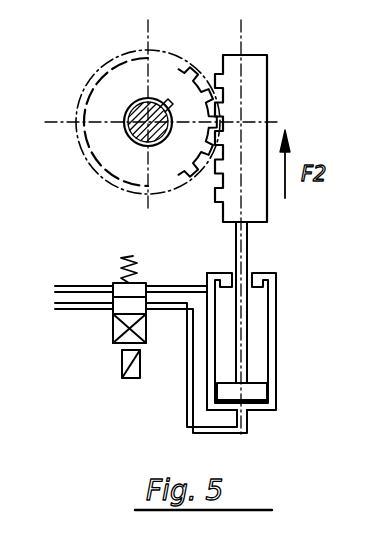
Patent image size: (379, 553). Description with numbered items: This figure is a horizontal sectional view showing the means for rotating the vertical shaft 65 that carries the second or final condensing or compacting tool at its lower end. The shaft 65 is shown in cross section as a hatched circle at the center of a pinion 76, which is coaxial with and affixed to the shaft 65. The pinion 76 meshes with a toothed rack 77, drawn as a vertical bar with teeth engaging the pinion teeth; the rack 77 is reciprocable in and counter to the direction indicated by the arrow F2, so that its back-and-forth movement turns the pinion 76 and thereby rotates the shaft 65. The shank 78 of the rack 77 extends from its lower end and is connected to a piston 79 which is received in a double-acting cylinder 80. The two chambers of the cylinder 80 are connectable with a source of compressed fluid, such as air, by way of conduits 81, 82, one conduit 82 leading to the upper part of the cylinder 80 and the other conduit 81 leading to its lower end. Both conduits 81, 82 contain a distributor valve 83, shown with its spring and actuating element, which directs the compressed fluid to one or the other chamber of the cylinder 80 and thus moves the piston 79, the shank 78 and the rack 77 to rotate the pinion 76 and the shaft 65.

The pinion 76 is at (112, 72).
The vertical shaft 65 is at (127, 132).
The toothed rack 77 is at (252, 83).
The shank 78 is at (243, 248).
The piston 79 is at (260, 390).
The double-acting cylinder 80 is at (260, 327).
The conduit 81 is at (187, 413).
The conduit 82 is at (175, 285).
The distributor valve 83 is at (113, 327).